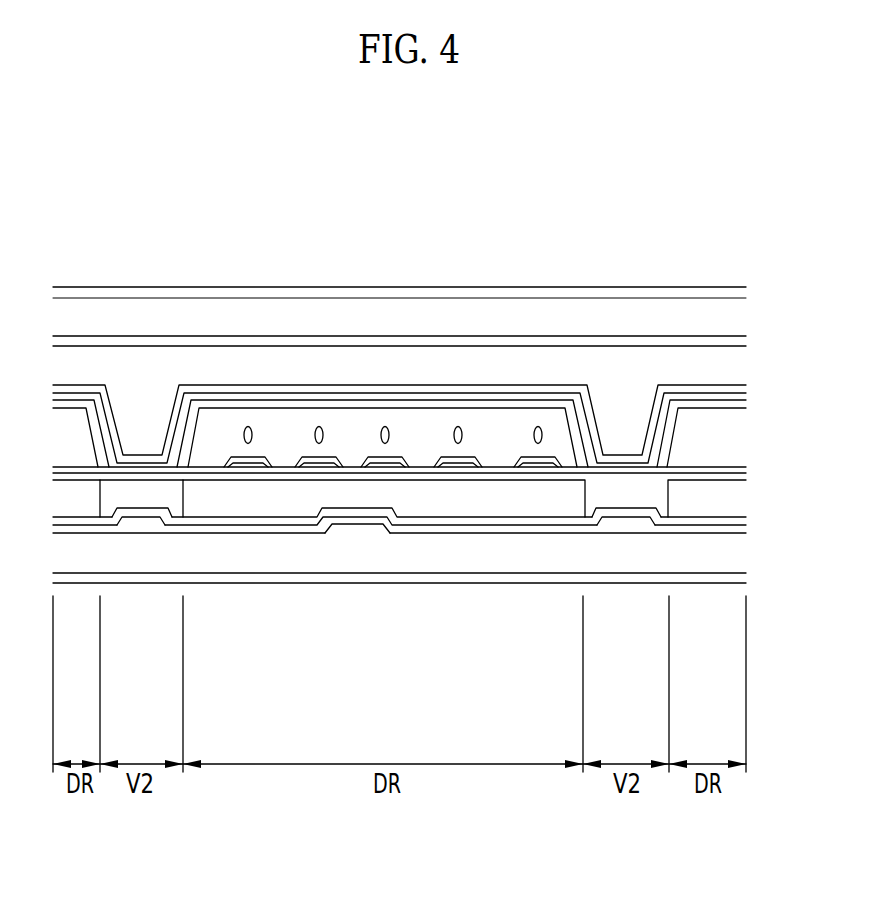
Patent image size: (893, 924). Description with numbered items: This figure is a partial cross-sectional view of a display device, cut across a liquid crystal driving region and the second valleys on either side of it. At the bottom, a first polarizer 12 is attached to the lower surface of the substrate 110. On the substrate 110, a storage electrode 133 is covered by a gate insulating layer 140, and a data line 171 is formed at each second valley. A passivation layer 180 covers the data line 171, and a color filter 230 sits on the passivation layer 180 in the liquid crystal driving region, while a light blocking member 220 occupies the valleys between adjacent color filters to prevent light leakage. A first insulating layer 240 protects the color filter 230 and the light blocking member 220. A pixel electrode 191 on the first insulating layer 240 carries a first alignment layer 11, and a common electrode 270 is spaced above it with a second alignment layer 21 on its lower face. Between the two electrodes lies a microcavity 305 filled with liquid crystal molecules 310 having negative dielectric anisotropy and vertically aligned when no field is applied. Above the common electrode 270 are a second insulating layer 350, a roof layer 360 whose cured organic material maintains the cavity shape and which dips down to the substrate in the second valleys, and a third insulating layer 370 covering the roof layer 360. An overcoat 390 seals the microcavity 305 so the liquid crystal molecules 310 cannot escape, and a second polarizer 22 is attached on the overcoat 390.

The first alignment layer 11 is at (290, 467).
The first polarizer 12 is at (628, 577).
The second alignment layer 21 is at (523, 407).
The second polarizer 22 is at (613, 292).
The substrate 110 is at (281, 565).
The storage electrode 133 is at (357, 528).
The gate insulating layer 140 is at (485, 532).
The data line 171 is at (142, 522).
The passivation layer 180 is at (543, 523).
The pixel electrode 191 is at (457, 467).
The light blocking member 220 is at (113, 491).
The color filter 230 is at (223, 497).
The first insulating layer 240 is at (713, 477).
The common electrode 270 is at (453, 397).
The microcavity 305 is at (342, 428).
The liquid crystal molecules 310 is at (463, 435).
The second insulating layer 350 is at (297, 388).
The roof layer 360 is at (228, 367).
The third insulating layer 370 is at (155, 340).
The overcoat 390 is at (83, 317).